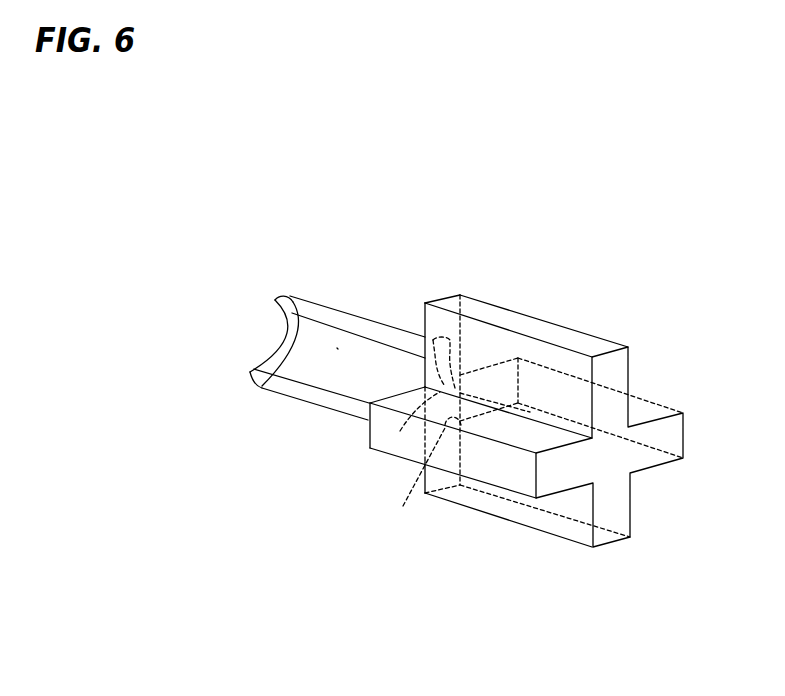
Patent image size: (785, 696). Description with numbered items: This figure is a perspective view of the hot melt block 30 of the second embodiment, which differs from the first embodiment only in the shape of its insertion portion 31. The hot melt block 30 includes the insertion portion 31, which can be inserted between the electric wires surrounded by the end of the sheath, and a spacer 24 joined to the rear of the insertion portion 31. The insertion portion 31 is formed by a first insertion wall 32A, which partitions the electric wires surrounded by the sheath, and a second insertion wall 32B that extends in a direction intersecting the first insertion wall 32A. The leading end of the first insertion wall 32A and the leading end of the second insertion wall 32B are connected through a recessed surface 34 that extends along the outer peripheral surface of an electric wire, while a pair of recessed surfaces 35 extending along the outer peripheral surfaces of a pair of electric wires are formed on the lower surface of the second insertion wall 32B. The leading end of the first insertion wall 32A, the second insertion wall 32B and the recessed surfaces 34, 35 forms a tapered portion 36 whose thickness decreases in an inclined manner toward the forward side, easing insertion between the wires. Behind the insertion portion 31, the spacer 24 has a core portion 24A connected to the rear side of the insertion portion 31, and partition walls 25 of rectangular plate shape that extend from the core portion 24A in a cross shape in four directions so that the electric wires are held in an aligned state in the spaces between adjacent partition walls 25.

The hot melt block 30 is at (549, 248).
The insertion portion 31 is at (268, 418).
The first insertion wall 32A is at (368, 328).
The second insertion wall 32B is at (330, 402).
The recessed surface 34 is at (337, 348).
The recessed surfaces 35 is at (428, 432).
The tapered portion 36 is at (282, 345).
The spacer 24 is at (603, 588).
The core portion 24A is at (620, 457).
The partition walls 25 is at (588, 347).